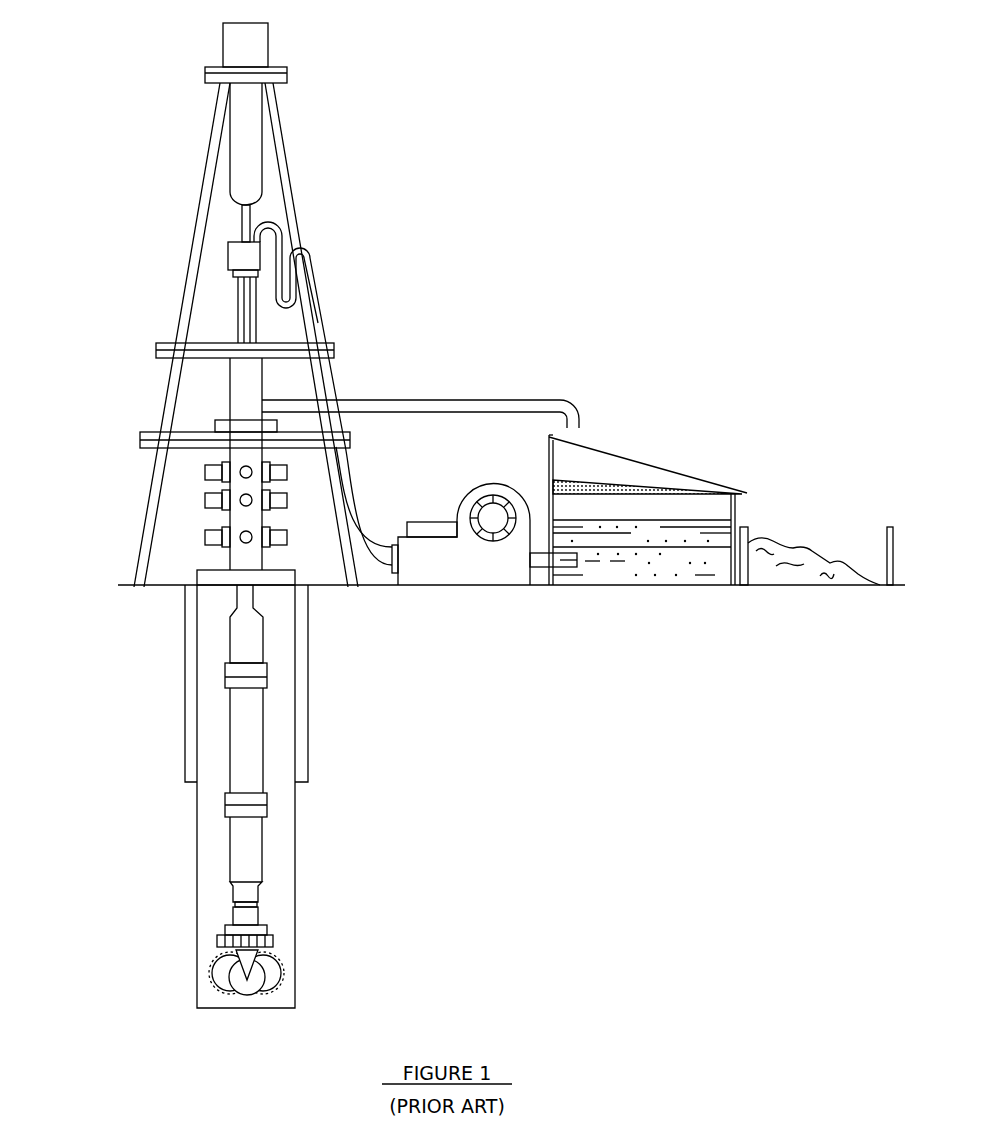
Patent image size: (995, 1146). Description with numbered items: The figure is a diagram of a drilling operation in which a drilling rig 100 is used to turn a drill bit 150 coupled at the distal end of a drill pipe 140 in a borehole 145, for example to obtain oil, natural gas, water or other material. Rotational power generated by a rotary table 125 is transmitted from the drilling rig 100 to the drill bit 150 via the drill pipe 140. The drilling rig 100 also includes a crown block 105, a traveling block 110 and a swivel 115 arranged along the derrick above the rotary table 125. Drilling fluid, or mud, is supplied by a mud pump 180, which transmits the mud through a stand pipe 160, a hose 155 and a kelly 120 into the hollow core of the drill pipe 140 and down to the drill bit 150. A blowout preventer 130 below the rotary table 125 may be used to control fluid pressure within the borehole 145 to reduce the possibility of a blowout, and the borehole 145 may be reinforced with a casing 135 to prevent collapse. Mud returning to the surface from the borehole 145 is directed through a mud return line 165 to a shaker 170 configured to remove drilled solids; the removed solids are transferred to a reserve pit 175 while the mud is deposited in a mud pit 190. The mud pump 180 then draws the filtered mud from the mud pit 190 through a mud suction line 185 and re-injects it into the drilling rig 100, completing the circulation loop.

The drilling rig 100 is at (449, 327).
The crown block 105 is at (245, 43).
The traveling block 110 is at (150, 143).
The swivel 115 is at (162, 225).
The kelly 120 is at (168, 306).
The rotary table 125 is at (206, 403).
The blowout preventer 130 is at (163, 471).
The casing 135 is at (190, 650).
The drill pipe 140 is at (242, 733).
The borehole 145 is at (197, 859).
The drill bit 150 is at (222, 973).
The hose 155 is at (322, 224).
The stand pipe 160 is at (397, 385).
The mud return line 165 is at (442, 355).
The shaker 170 is at (648, 468).
The reserve pit 175 is at (817, 502).
The mud pump 180 is at (438, 580).
The mud suction line 185 is at (611, 627).
The mud pit 190 is at (705, 597).